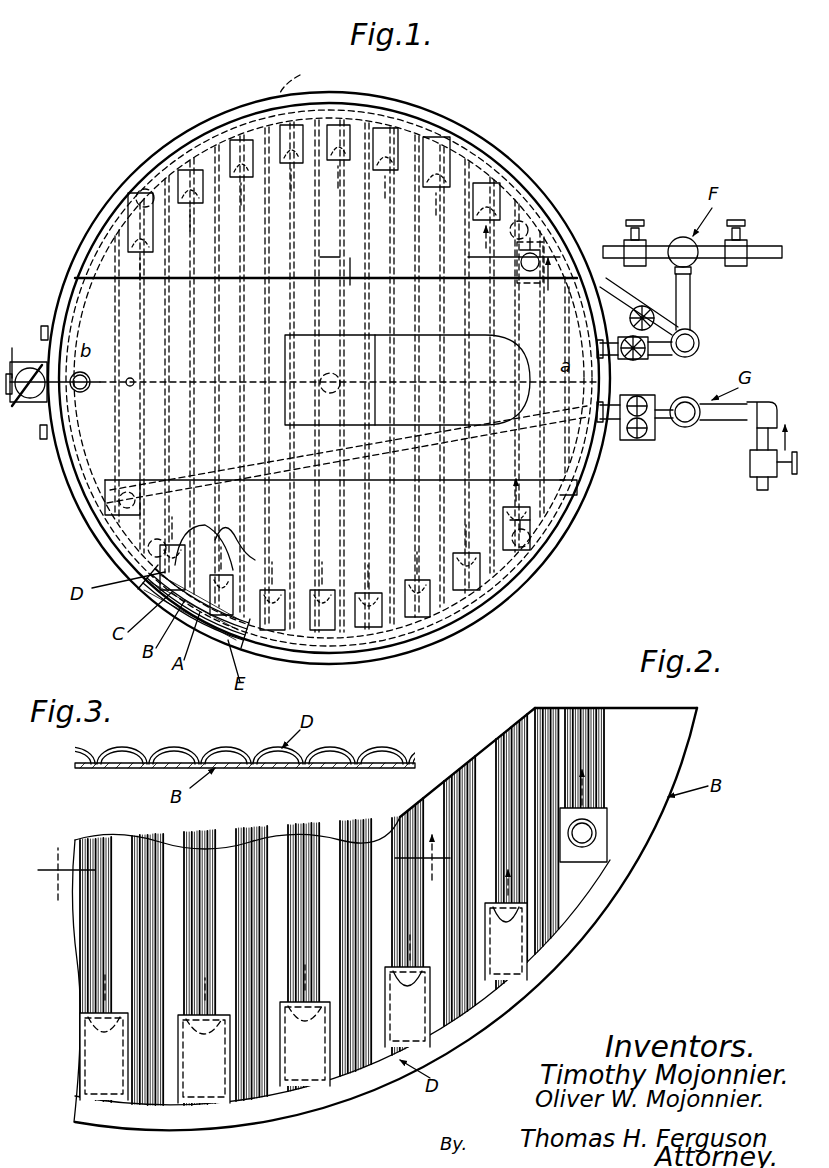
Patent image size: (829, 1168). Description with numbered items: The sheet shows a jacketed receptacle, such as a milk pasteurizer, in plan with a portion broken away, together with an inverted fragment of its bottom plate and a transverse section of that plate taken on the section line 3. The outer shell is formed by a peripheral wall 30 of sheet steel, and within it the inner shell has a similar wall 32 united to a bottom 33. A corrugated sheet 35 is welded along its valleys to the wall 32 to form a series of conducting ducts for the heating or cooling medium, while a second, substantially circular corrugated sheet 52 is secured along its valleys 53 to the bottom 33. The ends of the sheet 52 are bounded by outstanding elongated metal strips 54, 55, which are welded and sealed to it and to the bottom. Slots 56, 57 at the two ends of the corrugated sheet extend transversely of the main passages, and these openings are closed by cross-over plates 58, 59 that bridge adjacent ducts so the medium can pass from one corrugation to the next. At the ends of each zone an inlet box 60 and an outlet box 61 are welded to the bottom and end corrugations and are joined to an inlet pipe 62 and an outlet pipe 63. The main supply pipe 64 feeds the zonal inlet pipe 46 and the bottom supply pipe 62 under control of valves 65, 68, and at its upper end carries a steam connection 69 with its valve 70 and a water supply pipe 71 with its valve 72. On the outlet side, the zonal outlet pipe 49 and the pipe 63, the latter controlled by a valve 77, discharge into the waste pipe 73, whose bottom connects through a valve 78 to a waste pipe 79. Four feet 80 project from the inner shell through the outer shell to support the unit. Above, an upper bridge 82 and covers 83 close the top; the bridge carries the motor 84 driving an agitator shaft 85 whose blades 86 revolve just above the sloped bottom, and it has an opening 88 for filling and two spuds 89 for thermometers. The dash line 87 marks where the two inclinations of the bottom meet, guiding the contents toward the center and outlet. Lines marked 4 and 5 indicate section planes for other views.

In FIG. 2, the section line 3 is at (244, 875).
In FIG. 1, the section line 4 is at (407, 402).
In FIG. 1, the section line 5 is at (441, 285).
In FIG. 1, the peripheral wall 30 is at (505, 175).
In FIG. 1, the wall 32 is at (165, 590).
In FIG. 1, the bottom 33 is at (205, 540).
In FIG. 3, the bottom 33 is at (325, 768).
In FIG. 2, the bottom 33 is at (684, 712).
In FIG. 1, the corrugated sheet 35 is at (152, 590).
In FIG. 1, the inlet pipe 46 is at (665, 356).
In FIG. 1, the outlet pipe 49 is at (636, 407).
In FIG. 1, the corrugated sheet 52 is at (478, 160).
In FIG. 3, the corrugated sheet 52 is at (395, 748).
In FIG. 2, the corrugated sheet 52 is at (490, 780).
In FIG. 1, the valleys 53 is at (395, 115).
In FIG. 3, the valleys 53 is at (358, 750).
In FIG. 2, the valleys 53 is at (205, 857).
In FIG. 1, the elongated metal strip 54 is at (160, 600).
In FIG. 1, the elongated metal strip 55 is at (470, 145).
In FIG. 2, the elongated metal strip 55 is at (505, 1035).
In FIG. 1, the slots 56 is at (228, 625).
In FIG. 1, the slots 57 is at (318, 120).
In FIG. 2, the slots 57 is at (540, 915).
In FIG. 1, the cross-over plates 58 is at (500, 592).
In FIG. 1, the cross-over plates 59 is at (240, 125).
In FIG. 2, the cross-over plates 59 is at (110, 1030).
In FIG. 1, the inlet box 60 is at (545, 258).
In FIG. 2, the inlet box 60 is at (607, 848).
In FIG. 1, the outlet box 61 is at (110, 505).
In FIG. 1, the inlet pipe 62 is at (612, 300).
In FIG. 2, the inlet pipe 62 is at (595, 820).
In FIG. 1, the outlet pipe 63 is at (355, 490).
In FIG. 1, the main supply pipe 64 is at (700, 343).
In FIG. 1, the valve 65 is at (638, 360).
In FIG. 1, the valve 68 is at (648, 306).
In FIG. 1, the steam connection 69 is at (660, 246).
In FIG. 1, the valve 70 is at (638, 220).
In FIG. 1, the water supply pipe 71 is at (760, 246).
In FIG. 1, the valve 72 is at (738, 220).
In FIG. 1, the waste pipe 73 is at (685, 427).
In FIG. 1, the valve 77 is at (635, 440).
In FIG. 1, the valve 78 is at (752, 470).
In FIG. 1, the waste pipe 79 is at (722, 420).
In FIG. 1, the feet 80 is at (145, 198).
In FIG. 1, the upper bridge 82 is at (88, 306).
In FIG. 1, the covers 83 is at (535, 245).
In FIG. 1, the motor 84 is at (355, 340).
In FIG. 1, the agitator shaft 85 is at (329, 394).
In FIG. 1, the agitator blades 86 is at (30, 405).
In FIG. 1, the dash line 87 is at (210, 380).
In FIG. 1, the opening 88 is at (80, 392).
In FIG. 1, the spuds 89 is at (44, 332).